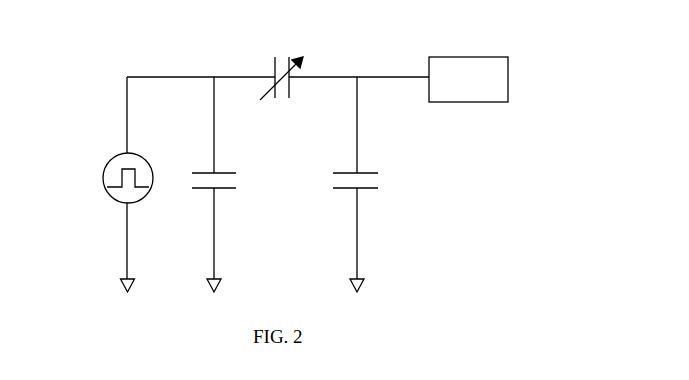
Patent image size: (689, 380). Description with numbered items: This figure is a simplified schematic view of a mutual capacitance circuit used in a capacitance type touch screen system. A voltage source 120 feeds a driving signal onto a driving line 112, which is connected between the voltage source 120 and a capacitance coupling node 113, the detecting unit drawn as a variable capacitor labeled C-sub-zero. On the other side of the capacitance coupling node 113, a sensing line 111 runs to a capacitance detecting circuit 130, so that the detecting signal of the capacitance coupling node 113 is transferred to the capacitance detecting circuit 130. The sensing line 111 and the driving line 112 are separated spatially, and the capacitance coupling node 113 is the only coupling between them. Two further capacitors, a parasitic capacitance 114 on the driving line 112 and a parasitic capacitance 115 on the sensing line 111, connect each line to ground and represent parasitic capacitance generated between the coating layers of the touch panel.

The sensing line 111 is at (374, 77).
The driving line 112 is at (166, 77).
The capacitance coupling node 113 is at (283, 52).
The parasitic capacitance 114 is at (241, 180).
The parasitic capacitance 115 is at (382, 180).
The voltage source 120 is at (105, 164).
The capacitance detecting circuit 130 is at (482, 57).